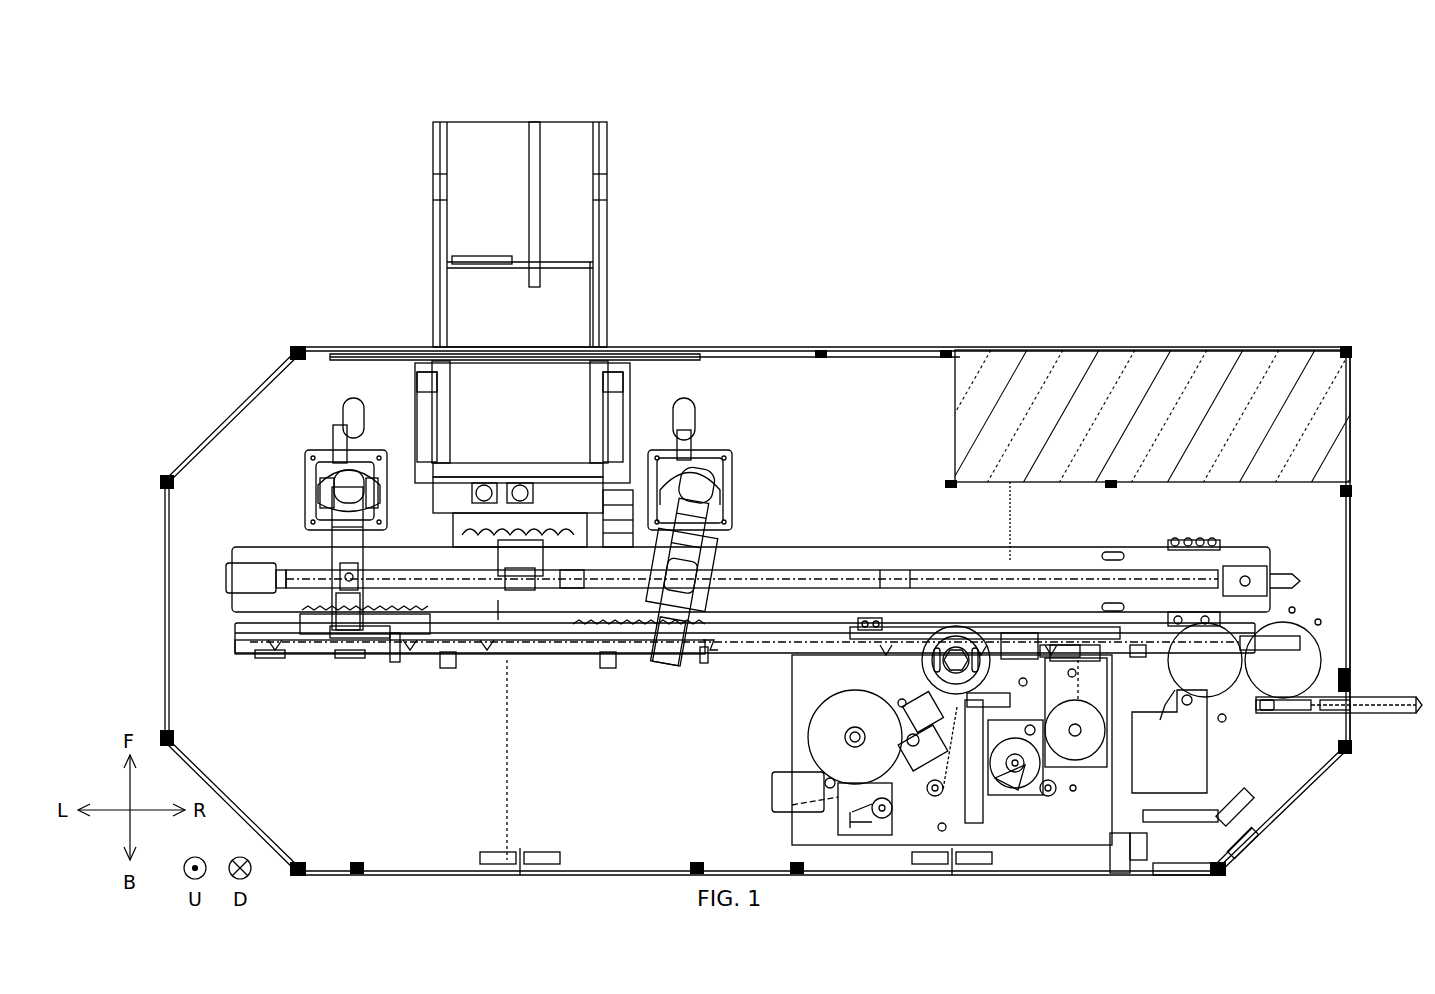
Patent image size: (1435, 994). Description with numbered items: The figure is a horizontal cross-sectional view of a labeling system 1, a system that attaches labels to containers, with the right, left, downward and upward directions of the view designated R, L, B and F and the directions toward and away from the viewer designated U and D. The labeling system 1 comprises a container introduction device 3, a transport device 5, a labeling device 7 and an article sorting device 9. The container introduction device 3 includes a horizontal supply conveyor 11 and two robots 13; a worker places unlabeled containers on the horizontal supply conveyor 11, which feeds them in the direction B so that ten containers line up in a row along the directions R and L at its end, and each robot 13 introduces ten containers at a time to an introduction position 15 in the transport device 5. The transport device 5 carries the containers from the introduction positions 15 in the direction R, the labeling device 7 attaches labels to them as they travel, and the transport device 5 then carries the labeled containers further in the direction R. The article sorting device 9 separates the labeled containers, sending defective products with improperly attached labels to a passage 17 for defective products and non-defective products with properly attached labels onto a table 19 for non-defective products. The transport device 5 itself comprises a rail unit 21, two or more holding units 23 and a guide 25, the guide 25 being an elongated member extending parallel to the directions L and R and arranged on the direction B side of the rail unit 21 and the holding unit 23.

The labeling system 1 is at (1273, 196).
The container introduction device 3 is at (680, 92).
The transport device 5 is at (530, 660).
The labeling device 7 is at (1023, 832).
The article sorting device 9 is at (1223, 697).
The horizontal supply conveyor 11 is at (480, 130).
The robot 13 is at (366, 468).
The introduction position 15 is at (316, 633).
The passage for defective products 17 is at (1381, 700).
The table for non-defective products 19 is at (1178, 785).
The rail unit 21 is at (790, 548).
The holding unit 23 is at (864, 620).
The guide 25 is at (770, 628).